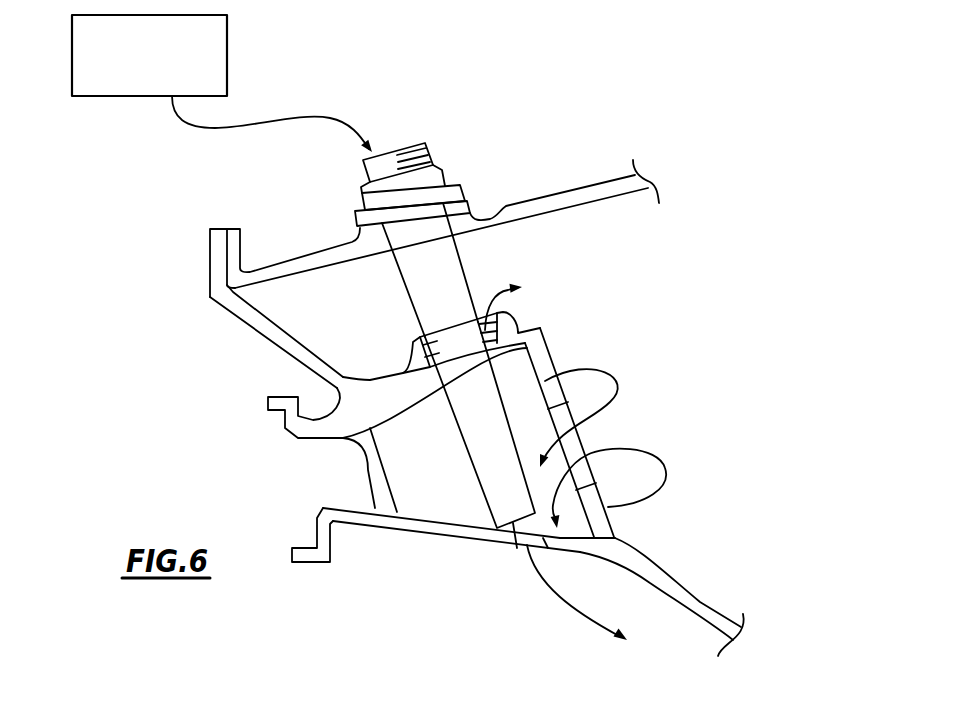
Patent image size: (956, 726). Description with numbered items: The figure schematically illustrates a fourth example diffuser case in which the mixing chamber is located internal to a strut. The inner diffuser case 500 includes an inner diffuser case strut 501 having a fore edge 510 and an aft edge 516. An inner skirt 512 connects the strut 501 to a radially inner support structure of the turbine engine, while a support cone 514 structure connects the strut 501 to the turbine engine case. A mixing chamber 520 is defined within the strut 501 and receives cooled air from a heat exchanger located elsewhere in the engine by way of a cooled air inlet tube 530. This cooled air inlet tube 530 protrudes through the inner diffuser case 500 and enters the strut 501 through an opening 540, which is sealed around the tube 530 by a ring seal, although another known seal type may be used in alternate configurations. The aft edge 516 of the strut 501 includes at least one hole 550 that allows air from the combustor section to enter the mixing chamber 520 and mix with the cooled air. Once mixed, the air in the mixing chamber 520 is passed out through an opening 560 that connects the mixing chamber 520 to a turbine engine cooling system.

The inner diffuser case 500 is at (166, 243).
The inner diffuser case strut 501 is at (522, 383).
The fore edge 510 is at (370, 468).
The inner skirt 512 is at (679, 602).
The support cone 514 is at (247, 313).
The aft edge 516 is at (583, 440).
The mixing chamber 520 is at (455, 505).
The cooled air inlet tube 530 is at (452, 279).
The opening 540 is at (428, 347).
The hole 550 is at (587, 478).
The opening 560 is at (525, 548).